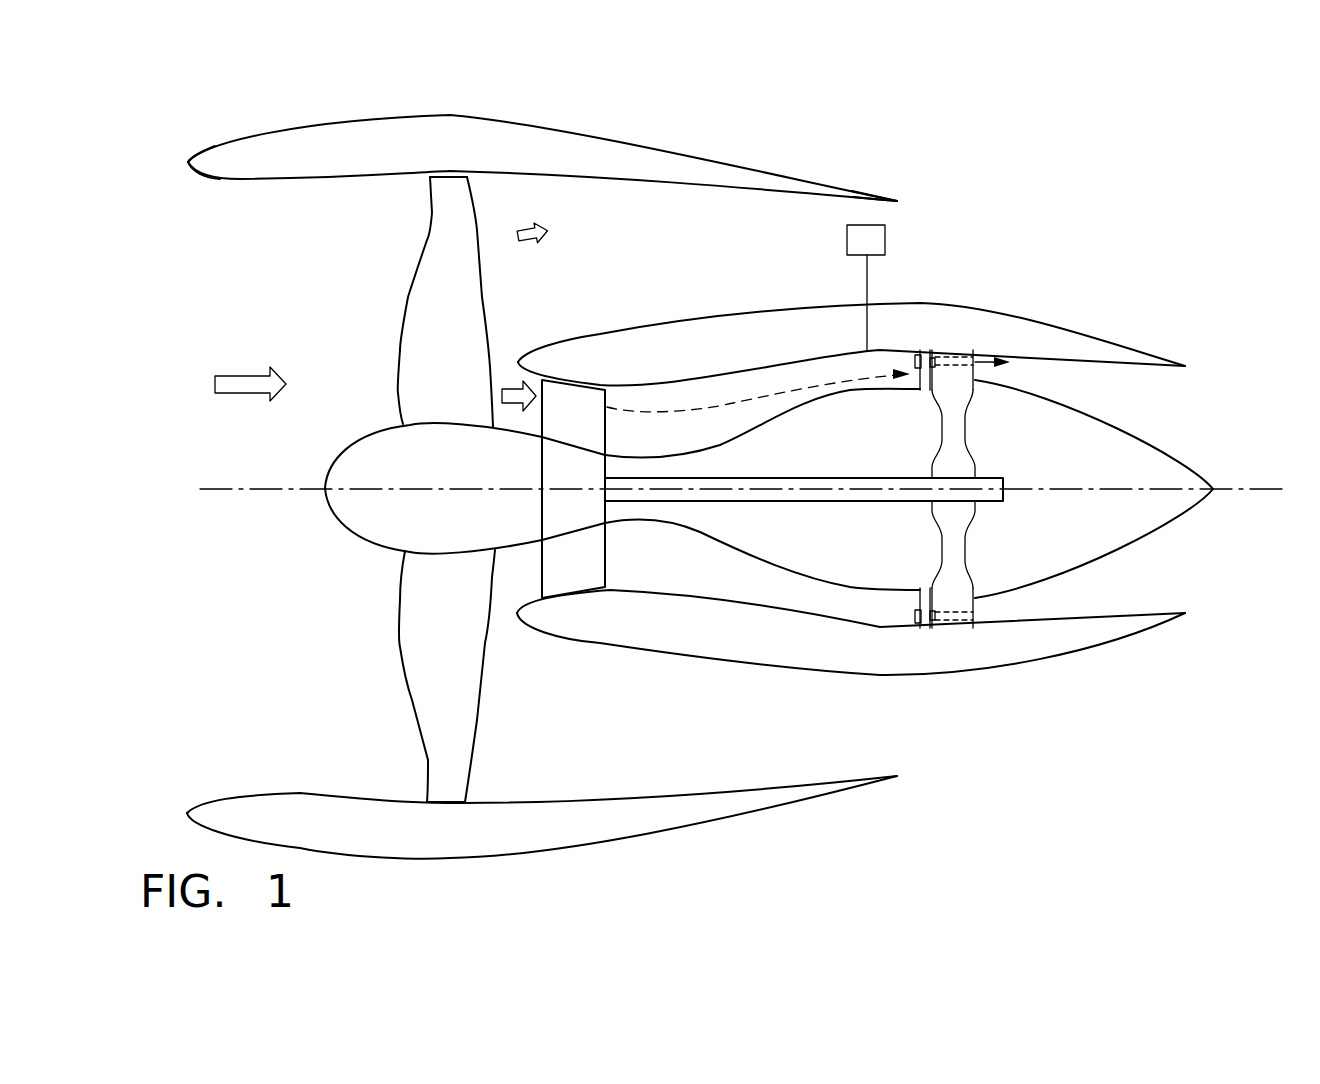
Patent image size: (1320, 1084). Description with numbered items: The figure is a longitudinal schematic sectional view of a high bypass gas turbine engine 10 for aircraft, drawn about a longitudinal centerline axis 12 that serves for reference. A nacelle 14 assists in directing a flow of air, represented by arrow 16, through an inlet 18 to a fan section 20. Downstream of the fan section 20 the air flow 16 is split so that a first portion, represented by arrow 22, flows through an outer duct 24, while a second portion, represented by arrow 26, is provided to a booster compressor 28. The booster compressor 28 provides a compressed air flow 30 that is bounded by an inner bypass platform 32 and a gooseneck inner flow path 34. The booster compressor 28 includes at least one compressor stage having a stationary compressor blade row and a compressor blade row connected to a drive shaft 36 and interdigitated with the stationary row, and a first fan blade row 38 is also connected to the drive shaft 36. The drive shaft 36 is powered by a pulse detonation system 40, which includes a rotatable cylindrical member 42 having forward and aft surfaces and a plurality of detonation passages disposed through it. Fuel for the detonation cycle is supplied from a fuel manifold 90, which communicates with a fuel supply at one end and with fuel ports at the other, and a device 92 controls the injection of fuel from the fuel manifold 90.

The gas turbine engine 10 is at (1185, 132).
The centerline axis 12 is at (285, 491).
The nacelle 14 is at (259, 146).
The air flow 16 is at (237, 372).
The inlet 18 is at (238, 181).
The fan section 20 is at (410, 703).
The first portion of air flow 22 is at (531, 241).
The outer duct 24 is at (664, 183).
The second portion of air flow 26 is at (515, 390).
The booster compressor 28 is at (535, 571).
The compressed air flow 30 is at (773, 384).
The inner bypass platform 32 is at (681, 332).
The gooseneck inner flow path 34 is at (735, 433).
The drive shaft 36 is at (738, 503).
The first fan blade row 38 is at (466, 724).
The pulse detonation system 40 is at (967, 342).
The rotatable cylindrical member 42 is at (975, 606).
The fuel manifold 90 is at (866, 279).
The device 92 is at (847, 239).